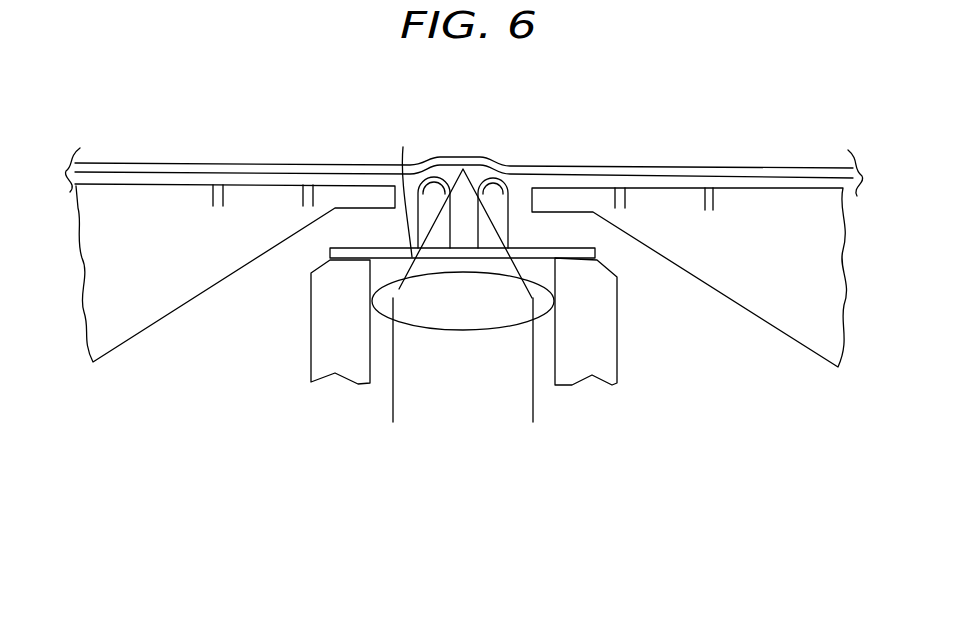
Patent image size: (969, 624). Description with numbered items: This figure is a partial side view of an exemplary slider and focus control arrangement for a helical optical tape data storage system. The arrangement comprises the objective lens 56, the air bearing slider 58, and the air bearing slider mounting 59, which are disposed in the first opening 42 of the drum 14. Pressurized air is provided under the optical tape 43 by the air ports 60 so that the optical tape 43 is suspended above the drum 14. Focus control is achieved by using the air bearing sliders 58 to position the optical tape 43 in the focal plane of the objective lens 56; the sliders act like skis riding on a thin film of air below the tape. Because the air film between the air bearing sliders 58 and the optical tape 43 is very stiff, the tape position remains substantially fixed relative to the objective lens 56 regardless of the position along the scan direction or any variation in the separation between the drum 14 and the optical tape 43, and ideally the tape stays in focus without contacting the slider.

The drum 14 is at (165, 198).
The first opening 42 is at (525, 197).
The optical tape 43 is at (565, 202).
The objective lens 56 is at (462, 307).
The air bearing slider 58 is at (490, 185).
The air bearing slider mounting 59 is at (332, 325).
The air ports 60 is at (307, 198).